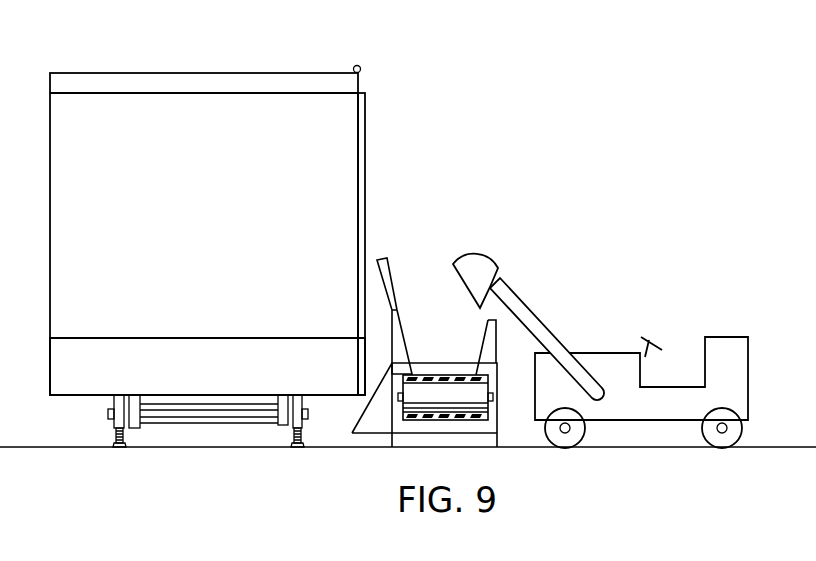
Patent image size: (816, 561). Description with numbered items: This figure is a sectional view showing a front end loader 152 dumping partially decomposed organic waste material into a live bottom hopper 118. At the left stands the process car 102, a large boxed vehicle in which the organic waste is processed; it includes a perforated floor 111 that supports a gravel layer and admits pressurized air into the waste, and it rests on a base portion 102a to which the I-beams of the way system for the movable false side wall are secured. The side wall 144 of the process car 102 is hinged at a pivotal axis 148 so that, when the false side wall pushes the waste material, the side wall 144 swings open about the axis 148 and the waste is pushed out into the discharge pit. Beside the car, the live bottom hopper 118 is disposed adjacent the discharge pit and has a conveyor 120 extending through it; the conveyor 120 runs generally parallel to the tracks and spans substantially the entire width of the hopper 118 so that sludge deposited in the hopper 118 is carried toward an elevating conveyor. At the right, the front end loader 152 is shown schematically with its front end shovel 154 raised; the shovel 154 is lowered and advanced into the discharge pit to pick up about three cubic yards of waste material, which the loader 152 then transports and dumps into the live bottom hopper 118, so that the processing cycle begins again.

The process car 102 is at (226, 217).
The base portion 102a is at (239, 385).
The perforated floor 111 is at (228, 338).
The side wall 144 is at (367, 167).
The hinged pivotal axis 148 is at (361, 67).
The conveyor 120 is at (434, 374).
The front end loader 152 is at (661, 319).
The live bottom hopper 118 is at (497, 334).
The front end shovel 154 is at (493, 255).